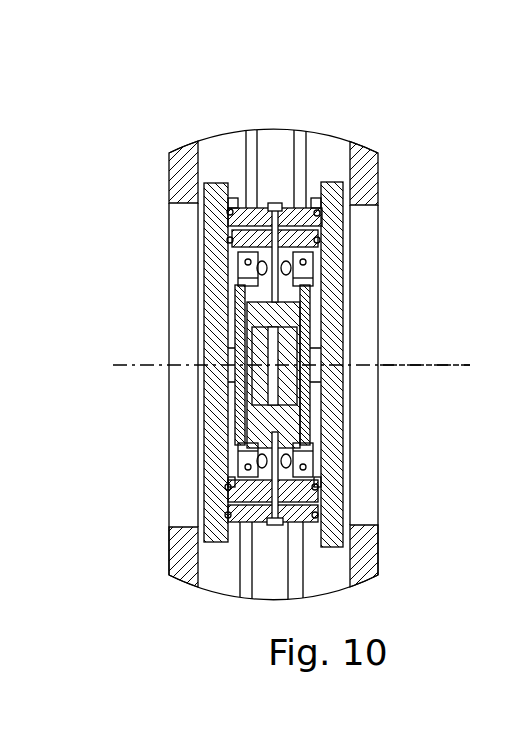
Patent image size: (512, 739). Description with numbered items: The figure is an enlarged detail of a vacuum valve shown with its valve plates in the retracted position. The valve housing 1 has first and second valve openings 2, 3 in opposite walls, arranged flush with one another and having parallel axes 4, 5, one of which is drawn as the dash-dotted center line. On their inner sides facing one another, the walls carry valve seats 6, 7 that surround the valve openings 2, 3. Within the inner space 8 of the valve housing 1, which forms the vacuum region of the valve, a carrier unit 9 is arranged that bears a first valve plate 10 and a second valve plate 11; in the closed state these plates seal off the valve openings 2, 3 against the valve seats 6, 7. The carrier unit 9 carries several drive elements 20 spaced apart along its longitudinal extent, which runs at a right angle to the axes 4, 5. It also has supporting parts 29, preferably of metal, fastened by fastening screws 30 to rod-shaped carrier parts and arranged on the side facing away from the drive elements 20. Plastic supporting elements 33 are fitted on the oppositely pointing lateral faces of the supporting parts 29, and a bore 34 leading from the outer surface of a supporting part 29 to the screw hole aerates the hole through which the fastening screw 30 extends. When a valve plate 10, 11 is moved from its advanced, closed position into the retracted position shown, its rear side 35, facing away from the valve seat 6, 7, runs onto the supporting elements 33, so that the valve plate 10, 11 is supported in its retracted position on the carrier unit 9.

The valve housing 1 is at (185, 163).
The first valve opening 2 is at (183, 466).
The second valve opening 3 is at (365, 467).
The axis of first valve opening 4 is at (135, 365).
The axis of second valve opening 5 is at (415, 365).
The first valve seat 6 is at (182, 198).
The second valve seat 7 is at (345, 543).
The inner space 8 is at (320, 158).
The carrier unit 9 is at (314, 266).
The first valve plate 10 is at (212, 483).
The second valve plate 11 is at (330, 226).
The drive element 20 is at (326, 287).
The supporting part 29 is at (325, 198).
The fastening screw 30 is at (308, 294).
The supporting element 33 is at (320, 212).
The bore 34 is at (256, 210).
The rear side of valve plate 35 is at (307, 325).